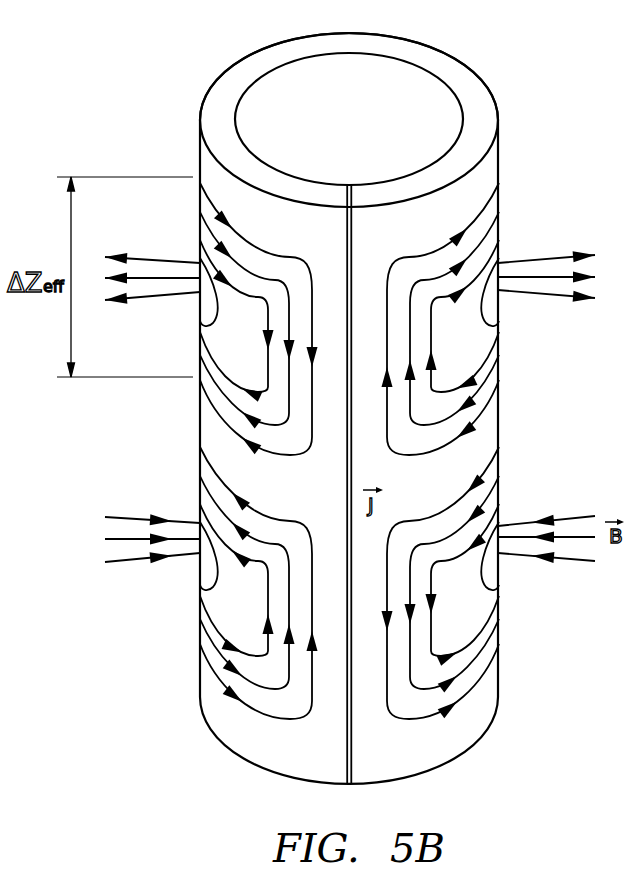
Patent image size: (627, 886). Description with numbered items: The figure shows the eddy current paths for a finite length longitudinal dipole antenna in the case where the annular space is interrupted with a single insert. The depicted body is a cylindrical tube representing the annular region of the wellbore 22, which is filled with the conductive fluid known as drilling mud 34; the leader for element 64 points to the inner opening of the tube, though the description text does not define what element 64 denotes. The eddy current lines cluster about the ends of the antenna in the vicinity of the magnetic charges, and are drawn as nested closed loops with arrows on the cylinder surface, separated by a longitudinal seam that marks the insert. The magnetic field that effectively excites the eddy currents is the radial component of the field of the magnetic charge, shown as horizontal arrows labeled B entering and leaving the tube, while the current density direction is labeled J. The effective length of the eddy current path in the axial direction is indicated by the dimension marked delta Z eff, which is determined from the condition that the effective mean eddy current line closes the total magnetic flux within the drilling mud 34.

The wellbore 22 is at (232, 65).
The drilling mud 34 is at (458, 72).
The inner bore of cylinder 64 is at (283, 63).